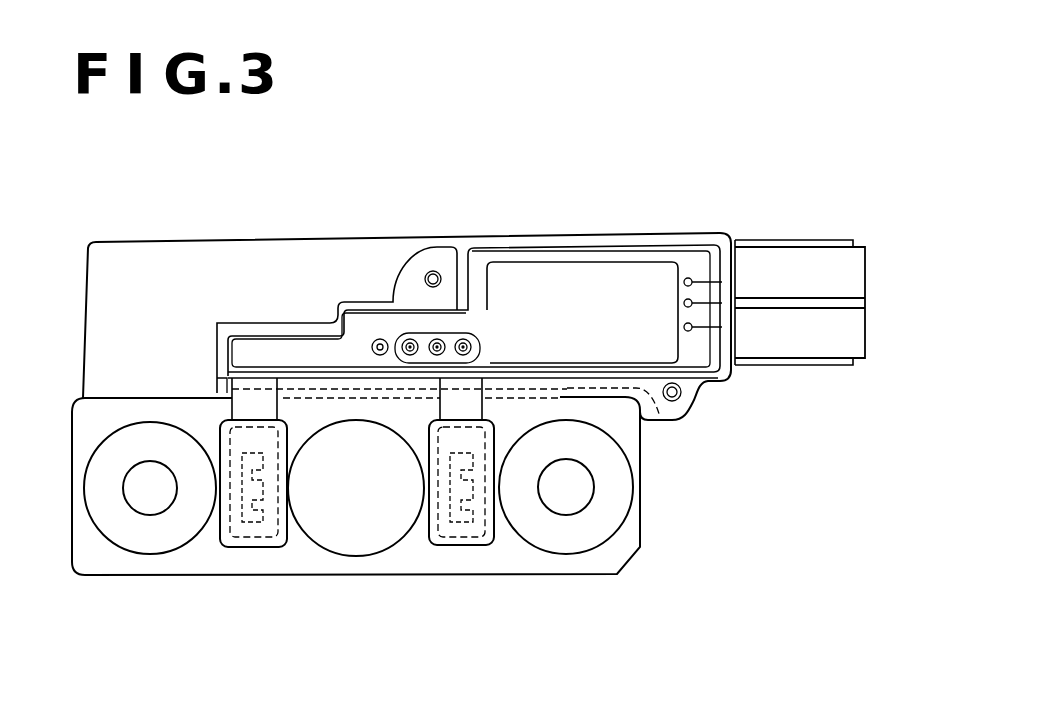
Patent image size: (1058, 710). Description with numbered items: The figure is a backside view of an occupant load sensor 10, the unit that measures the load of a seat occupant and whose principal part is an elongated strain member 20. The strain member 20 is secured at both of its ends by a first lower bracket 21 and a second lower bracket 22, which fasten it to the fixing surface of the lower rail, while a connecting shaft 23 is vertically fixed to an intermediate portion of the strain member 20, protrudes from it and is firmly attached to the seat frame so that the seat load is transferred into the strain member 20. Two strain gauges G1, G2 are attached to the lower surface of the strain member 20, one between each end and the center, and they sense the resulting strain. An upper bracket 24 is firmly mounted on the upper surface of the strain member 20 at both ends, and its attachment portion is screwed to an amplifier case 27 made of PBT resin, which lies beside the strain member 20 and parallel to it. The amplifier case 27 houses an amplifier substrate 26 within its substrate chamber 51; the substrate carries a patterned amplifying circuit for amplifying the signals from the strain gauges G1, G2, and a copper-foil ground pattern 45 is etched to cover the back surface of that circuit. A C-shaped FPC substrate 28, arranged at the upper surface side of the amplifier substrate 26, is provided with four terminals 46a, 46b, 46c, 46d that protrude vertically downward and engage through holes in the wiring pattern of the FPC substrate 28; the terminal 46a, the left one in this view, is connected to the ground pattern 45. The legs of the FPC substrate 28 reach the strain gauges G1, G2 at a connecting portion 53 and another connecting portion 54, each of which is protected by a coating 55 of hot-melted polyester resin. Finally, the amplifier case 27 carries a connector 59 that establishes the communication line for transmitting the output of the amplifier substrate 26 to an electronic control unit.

The occupant load sensor 10 is at (873, 212).
The strain member 20 is at (408, 560).
The first lower bracket 21 is at (128, 538).
The second lower bracket 22 is at (587, 535).
The connecting shaft 23 is at (350, 547).
The upper bracket 24 is at (168, 258).
The amplifier substrate 26 is at (653, 249).
The amplifier case 27 is at (434, 270).
The FPC substrate 28 is at (223, 404).
The ground pattern 45 is at (537, 270).
The terminal 46a is at (376, 339).
The terminal 46b is at (406, 339).
The terminal 46c is at (434, 339).
The terminal 46d is at (466, 339).
The substrate chamber 51 is at (717, 263).
The connecting portion 53 is at (257, 538).
The connecting portion 54 is at (448, 540).
The coating 55 is at (278, 537).
The connector 59 is at (826, 262).
The strain gauge G1 is at (252, 517).
The strain gauge G2 is at (460, 517).